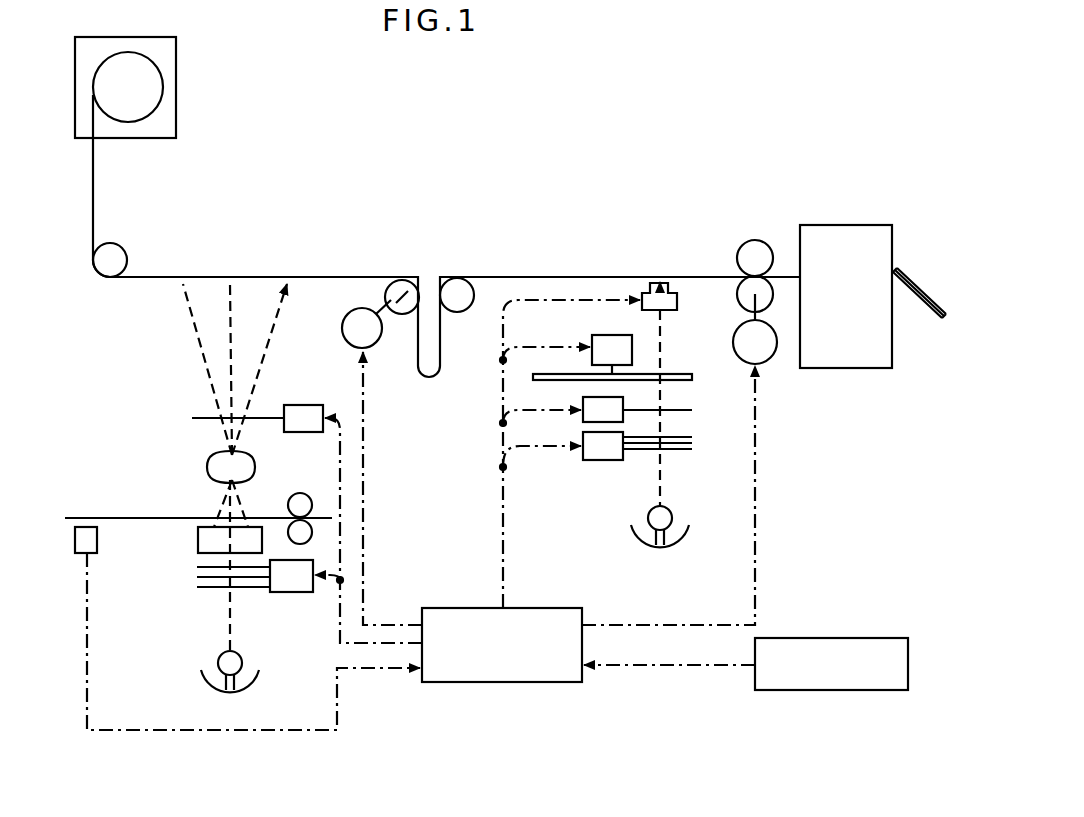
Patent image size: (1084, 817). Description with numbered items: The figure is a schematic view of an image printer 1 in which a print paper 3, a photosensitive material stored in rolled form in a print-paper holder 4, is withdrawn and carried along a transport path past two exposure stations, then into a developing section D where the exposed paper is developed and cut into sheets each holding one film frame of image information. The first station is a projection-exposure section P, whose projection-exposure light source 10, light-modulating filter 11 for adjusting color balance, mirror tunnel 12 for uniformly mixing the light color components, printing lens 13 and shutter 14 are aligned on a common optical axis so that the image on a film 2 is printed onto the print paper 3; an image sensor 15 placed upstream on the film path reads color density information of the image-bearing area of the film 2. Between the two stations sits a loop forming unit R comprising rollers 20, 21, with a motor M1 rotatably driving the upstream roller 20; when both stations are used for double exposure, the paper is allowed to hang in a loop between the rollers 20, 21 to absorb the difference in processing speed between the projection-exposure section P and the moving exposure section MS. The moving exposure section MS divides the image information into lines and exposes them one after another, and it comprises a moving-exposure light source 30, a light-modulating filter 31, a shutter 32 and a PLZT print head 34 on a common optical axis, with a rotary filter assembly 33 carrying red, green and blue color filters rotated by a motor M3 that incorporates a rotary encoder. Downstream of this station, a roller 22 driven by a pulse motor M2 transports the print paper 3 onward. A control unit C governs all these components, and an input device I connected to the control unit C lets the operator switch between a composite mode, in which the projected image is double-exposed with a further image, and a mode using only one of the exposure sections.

The image printer 1 is at (618, 150).
The film 2 is at (122, 517).
The print paper 3 is at (93, 203).
The print-paper holder 4 is at (176, 87).
The projection-exposure light source 10 is at (202, 683).
The light-modulating filter 11 is at (290, 592).
The mirror tunnel 12 is at (198, 540).
The printing lens 13 is at (207, 462).
The shutter 14 is at (307, 405).
The image sensor 15 is at (97, 543).
The roller 20 is at (400, 280).
The roller 21 is at (458, 278).
The roller 22 is at (756, 240).
The moving-exposure light source 30 is at (685, 537).
The light-modulating filter 31 is at (580, 462).
The shutter 32 is at (583, 418).
The rotary filter assembly 33 is at (533, 378).
The PLZT print head 34 is at (672, 285).
The motor M1 is at (350, 312).
The pulse motor M2 is at (767, 360).
The motor M3 is at (605, 335).
The moving exposure section MS is at (602, 528).
The loop forming unit R is at (445, 256).
The developing section D is at (848, 225).
The control unit C is at (493, 682).
The projection-exposure section P is at (276, 692).
The input device I is at (815, 690).